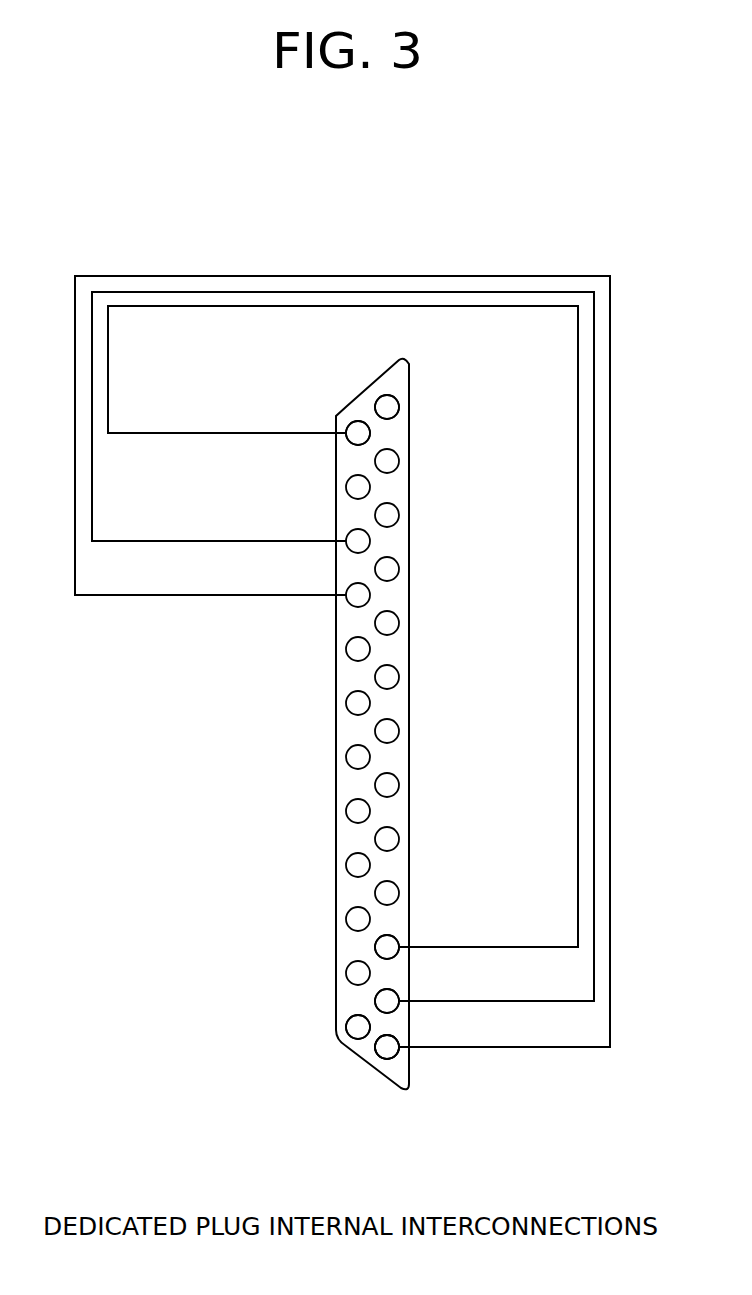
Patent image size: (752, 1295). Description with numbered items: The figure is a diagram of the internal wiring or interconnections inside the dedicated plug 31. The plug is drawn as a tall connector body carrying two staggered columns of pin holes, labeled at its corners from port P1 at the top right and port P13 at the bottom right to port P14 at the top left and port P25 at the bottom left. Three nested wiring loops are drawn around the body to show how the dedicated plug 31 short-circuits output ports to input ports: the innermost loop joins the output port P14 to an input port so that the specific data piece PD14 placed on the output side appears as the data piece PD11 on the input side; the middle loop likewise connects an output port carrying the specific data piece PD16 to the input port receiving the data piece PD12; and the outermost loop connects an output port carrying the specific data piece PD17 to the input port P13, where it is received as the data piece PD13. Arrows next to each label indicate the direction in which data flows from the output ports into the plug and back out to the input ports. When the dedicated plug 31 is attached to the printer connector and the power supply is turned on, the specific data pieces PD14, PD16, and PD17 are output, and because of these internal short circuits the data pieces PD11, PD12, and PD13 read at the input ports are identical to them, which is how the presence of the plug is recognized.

The dedicated plug 31 is at (410, 673).
The port P1 pin P1 is at (394, 397).
The input port P13 is at (388, 1059).
The output port P14 is at (353, 422).
The port P25 pin P25 is at (348, 1040).
The data piece PD11 is at (422, 929).
The data piece PD12 is at (422, 987).
The data piece PD13 is at (422, 1032).
The specific data piece PD14 is at (325, 418).
The specific data piece PD16 is at (325, 526).
The specific data piece PD17 is at (325, 581).